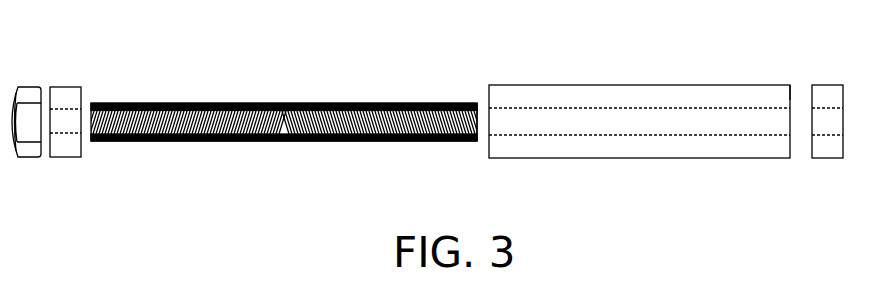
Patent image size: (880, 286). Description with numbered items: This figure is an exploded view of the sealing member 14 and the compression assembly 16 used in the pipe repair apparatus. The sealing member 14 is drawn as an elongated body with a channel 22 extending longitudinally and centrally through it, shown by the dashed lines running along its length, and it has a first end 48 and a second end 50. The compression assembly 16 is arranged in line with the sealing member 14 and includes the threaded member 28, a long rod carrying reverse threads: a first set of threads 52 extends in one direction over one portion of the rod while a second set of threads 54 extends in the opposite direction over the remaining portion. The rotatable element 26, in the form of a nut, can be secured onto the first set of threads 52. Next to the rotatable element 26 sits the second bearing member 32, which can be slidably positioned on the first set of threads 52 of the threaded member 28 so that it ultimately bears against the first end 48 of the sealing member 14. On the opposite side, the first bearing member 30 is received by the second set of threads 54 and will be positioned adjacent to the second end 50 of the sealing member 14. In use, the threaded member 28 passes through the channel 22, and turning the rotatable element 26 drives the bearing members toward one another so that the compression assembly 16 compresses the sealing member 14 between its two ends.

The sealing member 14 is at (653, 94).
The compression assembly 16 is at (418, 67).
The channel 22 is at (715, 108).
The rotatable element 26 is at (27, 87).
The threaded member 28 is at (285, 120).
The first bearing member 30 is at (827, 158).
The second bearing member 32 is at (65, 87).
The first end 48 is at (481, 104).
The second end 50 is at (792, 95).
The first set of threads 52 is at (170, 103).
The second set of threads 54 is at (357, 108).